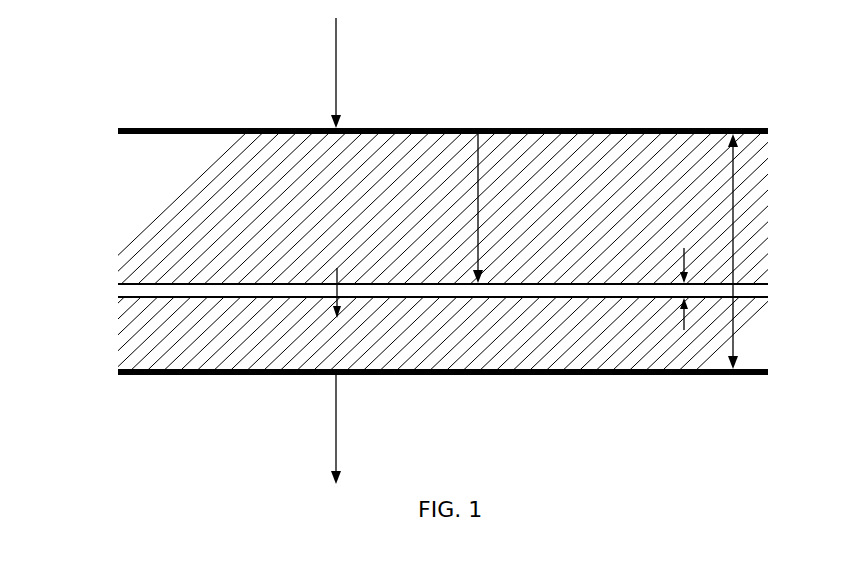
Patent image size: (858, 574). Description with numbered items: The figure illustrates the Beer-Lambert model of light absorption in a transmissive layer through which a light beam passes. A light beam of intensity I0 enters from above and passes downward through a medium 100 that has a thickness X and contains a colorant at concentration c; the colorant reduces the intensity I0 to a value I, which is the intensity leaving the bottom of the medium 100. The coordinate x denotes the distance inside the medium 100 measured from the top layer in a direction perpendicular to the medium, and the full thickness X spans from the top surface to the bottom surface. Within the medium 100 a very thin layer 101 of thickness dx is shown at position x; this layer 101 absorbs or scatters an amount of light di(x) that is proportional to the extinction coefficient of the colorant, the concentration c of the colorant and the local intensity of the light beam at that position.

The medium 100 is at (95, 128).
The very thin layer 101 is at (775, 284).
The intensity of the incident light beam I0 is at (349, 73).
The transmitted intensity I is at (343, 429).
The distance in the medium x is at (484, 208).
The thickness of the medium X is at (740, 251).
The thickness of the very thin layer dx is at (696, 289).